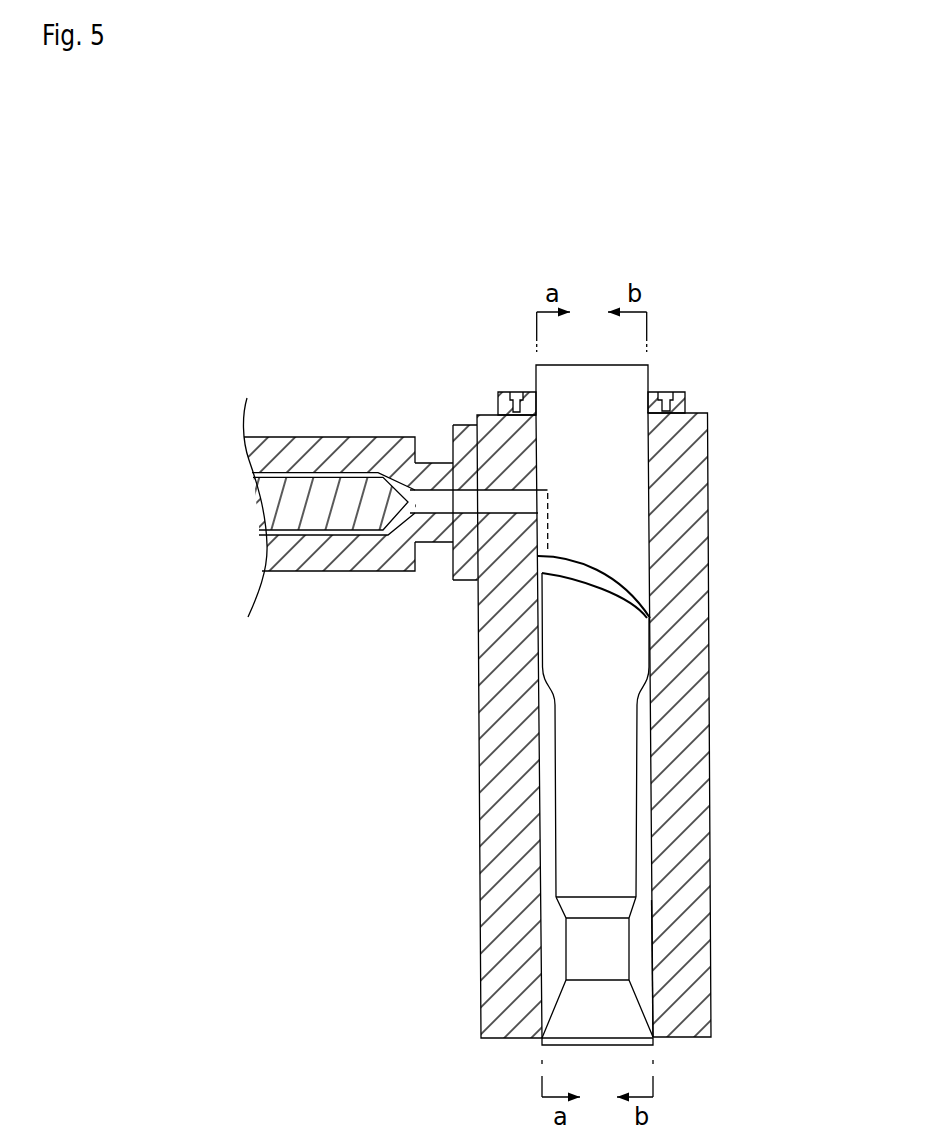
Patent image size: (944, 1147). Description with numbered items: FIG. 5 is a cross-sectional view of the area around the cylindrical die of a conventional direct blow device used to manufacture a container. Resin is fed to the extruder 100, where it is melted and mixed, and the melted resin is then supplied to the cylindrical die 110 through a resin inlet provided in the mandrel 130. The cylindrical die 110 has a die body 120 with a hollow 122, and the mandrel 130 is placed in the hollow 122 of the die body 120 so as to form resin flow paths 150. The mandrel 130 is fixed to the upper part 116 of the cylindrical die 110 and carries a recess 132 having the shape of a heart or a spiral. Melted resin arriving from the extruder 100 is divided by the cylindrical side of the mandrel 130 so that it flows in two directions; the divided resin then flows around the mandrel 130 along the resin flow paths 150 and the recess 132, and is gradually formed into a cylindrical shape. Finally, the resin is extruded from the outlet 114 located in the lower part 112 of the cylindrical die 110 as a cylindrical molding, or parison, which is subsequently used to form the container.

The extruder 100 is at (348, 424).
The cylindrical die 110 is at (779, 441).
The lower part 112 is at (700, 983).
The outlet 114 is at (660, 1005).
The upper part 116 is at (683, 392).
The die body 120 is at (690, 705).
The hollow 122 is at (652, 800).
The mandrel 130 is at (565, 685).
The recess 132 is at (602, 577).
The resin flow paths 150 is at (640, 928).